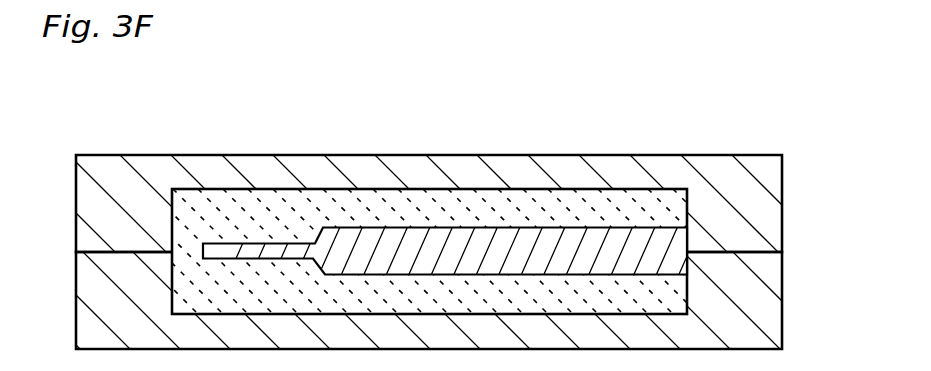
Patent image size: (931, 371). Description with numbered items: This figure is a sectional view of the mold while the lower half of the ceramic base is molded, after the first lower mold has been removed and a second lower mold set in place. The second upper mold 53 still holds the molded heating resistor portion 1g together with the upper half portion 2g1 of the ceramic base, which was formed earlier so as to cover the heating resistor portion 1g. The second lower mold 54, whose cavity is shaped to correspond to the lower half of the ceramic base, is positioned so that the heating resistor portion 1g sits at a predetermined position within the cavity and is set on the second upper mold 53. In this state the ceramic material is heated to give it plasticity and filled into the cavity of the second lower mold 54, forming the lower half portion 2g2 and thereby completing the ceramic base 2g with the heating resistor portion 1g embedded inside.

The second upper mold 53 is at (762, 203).
The second lower mold 54 is at (772, 293).
The ceramic base 2g is at (313, 100).
The upper half portion of the ceramic base 2g1 is at (218, 224).
The lower half portion of the ceramic base 2g2 is at (290, 297).
The heating resistor portion 1g is at (525, 253).